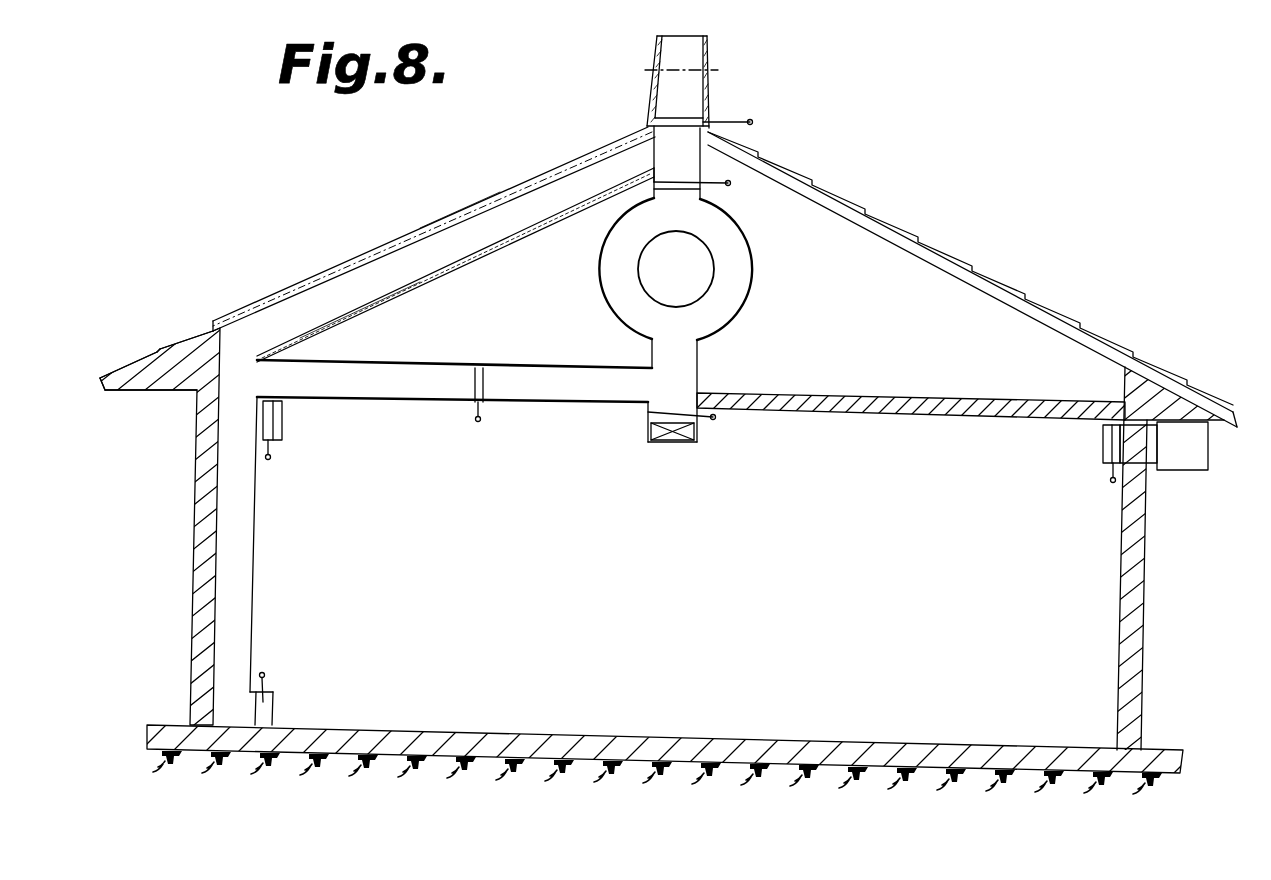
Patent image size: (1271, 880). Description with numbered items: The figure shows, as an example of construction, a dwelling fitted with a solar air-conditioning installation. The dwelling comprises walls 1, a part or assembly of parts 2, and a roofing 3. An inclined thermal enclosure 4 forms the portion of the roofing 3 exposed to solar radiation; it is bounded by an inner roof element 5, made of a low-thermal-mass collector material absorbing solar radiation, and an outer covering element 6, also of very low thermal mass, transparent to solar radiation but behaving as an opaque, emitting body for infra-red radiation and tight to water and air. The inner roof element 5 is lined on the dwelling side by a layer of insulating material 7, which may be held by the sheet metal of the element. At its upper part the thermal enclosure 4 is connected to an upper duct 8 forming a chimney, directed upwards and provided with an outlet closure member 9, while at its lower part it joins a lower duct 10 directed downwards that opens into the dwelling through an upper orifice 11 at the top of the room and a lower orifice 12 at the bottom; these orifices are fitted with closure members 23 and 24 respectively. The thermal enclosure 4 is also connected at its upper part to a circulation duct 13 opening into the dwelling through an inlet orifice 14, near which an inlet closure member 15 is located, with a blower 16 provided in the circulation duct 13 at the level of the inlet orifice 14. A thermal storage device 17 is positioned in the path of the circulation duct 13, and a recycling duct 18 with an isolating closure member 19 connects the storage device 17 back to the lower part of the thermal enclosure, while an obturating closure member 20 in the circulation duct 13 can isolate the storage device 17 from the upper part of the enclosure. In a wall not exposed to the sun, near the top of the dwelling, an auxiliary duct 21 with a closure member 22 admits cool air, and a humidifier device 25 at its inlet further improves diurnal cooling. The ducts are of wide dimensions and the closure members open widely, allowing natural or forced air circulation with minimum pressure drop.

The walls 1 is at (196, 566).
The part or assembly of parts 2 is at (690, 594).
The roofing 3 is at (884, 212).
The thermal enclosure 4 is at (585, 170).
The inner roof element 5 is at (513, 233).
The outer covering element 6 is at (400, 244).
The layer of insulating material 7 is at (352, 314).
The upper duct 8 is at (690, 97).
The outlet closure member 9 is at (662, 118).
The lower duct 10 is at (240, 398).
The upper orifice 11 is at (283, 424).
The lower orifice 12 is at (263, 717).
The circulation duct 13 is at (673, 355).
The inlet orifice 14 is at (683, 442).
The inlet closure member 15 is at (651, 415).
The blower 16 is at (661, 434).
The thermal storage device 17 is at (691, 282).
The recycling duct 18 is at (535, 392).
The isolating closure member 19 is at (473, 390).
The obturating closure member 20 is at (703, 192).
The auxiliary duct 21 is at (1140, 450).
The closure member 22 is at (1110, 440).
The closure member 23 is at (277, 437).
The closure member 24 is at (283, 682).
The humidifier device 25 is at (1194, 443).